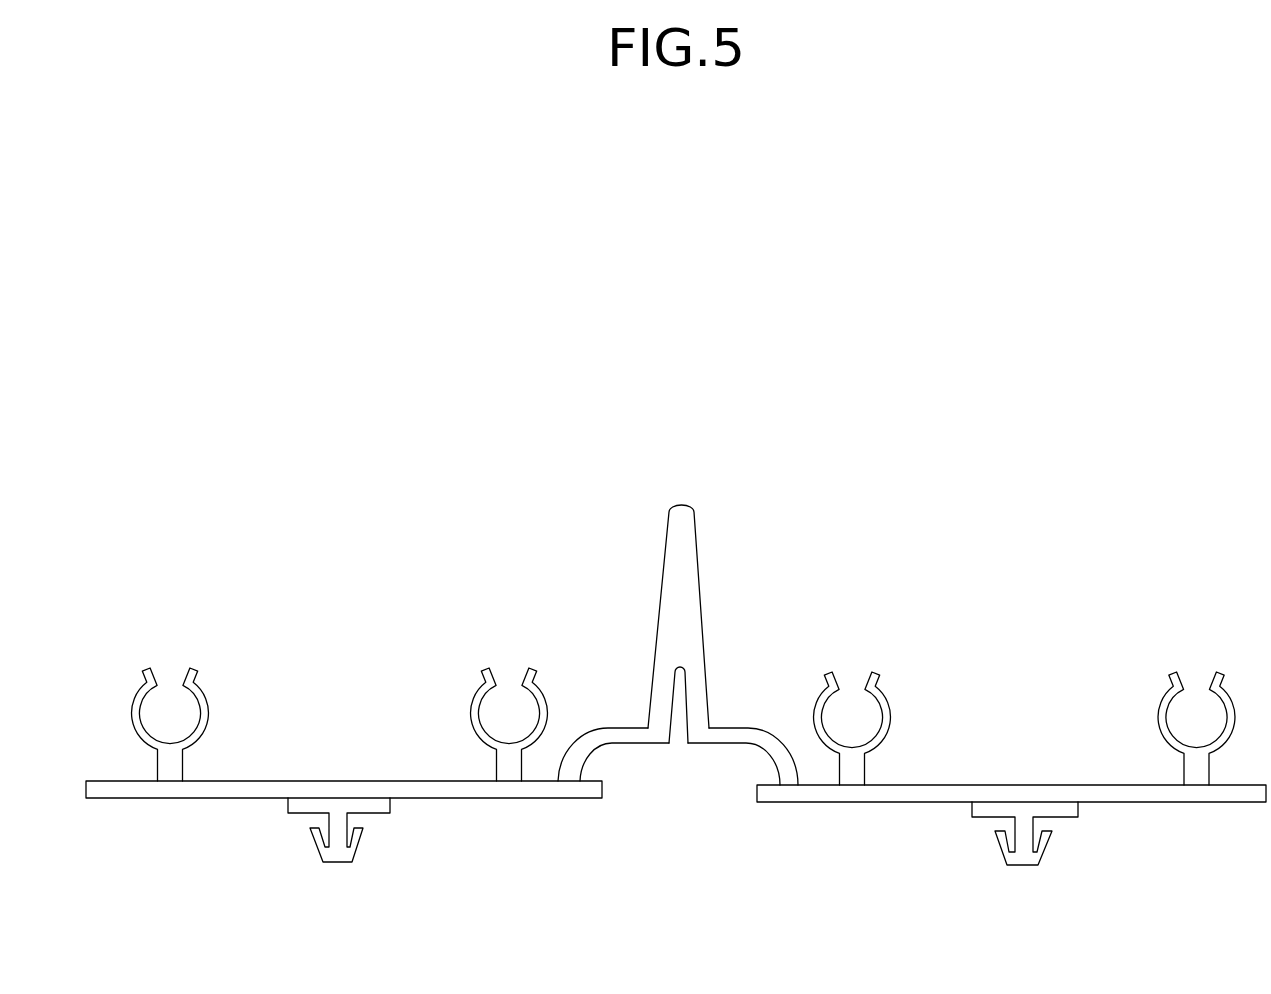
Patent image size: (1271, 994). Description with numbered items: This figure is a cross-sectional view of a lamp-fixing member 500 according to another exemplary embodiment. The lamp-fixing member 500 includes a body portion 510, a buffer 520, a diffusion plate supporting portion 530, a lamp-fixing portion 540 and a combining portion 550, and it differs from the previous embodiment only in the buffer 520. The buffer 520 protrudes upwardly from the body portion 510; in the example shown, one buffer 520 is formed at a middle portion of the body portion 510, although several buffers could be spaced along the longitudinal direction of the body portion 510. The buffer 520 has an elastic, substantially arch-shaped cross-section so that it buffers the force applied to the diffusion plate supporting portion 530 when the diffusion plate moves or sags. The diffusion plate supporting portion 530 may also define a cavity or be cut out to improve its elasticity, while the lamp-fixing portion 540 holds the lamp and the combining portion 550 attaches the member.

The lamp-fixing member 500 is at (748, 490).
The body portion 510 is at (851, 802).
The buffer 520 is at (720, 743).
The diffusion plate supporting portion 530 is at (687, 607).
The lamp-fixing portion 540 is at (891, 720).
The combining portion 550 is at (1040, 859).